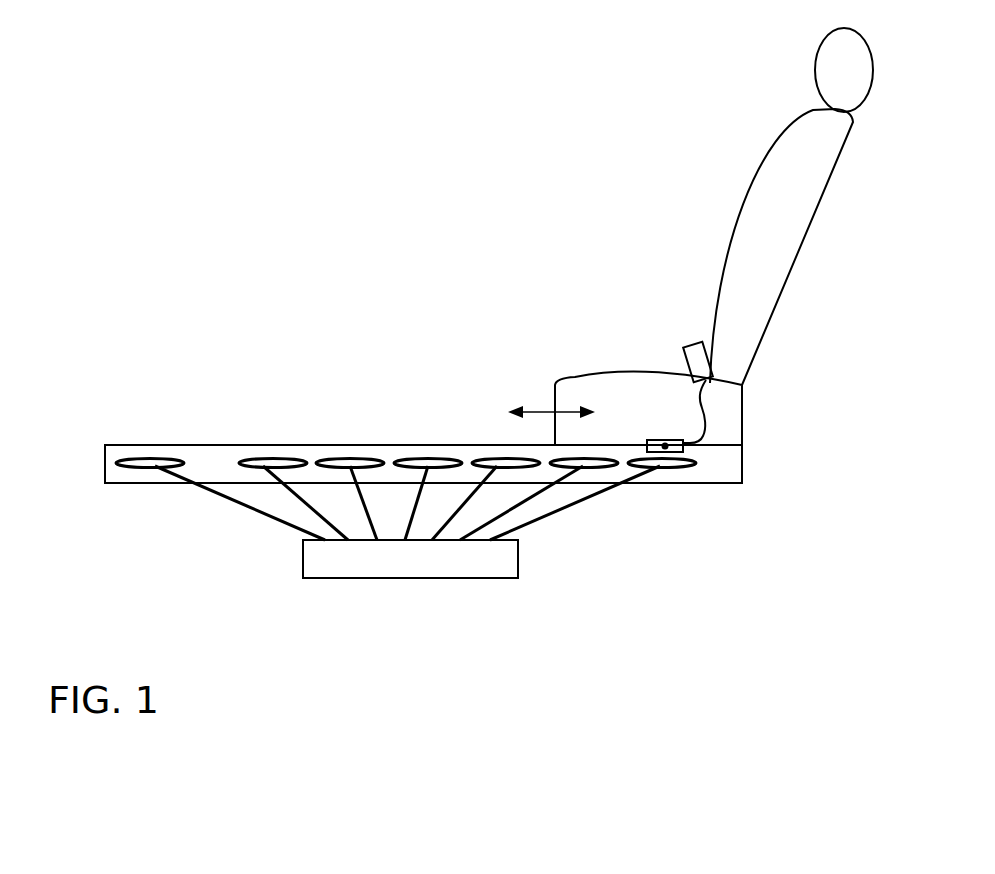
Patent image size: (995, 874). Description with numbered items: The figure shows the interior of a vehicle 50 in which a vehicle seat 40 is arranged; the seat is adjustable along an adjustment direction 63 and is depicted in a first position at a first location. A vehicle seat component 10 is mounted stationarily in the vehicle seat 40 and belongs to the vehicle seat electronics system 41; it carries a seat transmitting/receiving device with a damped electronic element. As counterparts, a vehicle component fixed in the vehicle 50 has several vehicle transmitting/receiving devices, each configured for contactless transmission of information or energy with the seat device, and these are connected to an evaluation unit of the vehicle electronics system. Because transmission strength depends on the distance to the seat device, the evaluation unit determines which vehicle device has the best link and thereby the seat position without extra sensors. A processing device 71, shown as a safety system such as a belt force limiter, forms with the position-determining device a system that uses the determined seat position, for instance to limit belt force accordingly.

The vehicle seat component 10 is at (640, 423).
The vehicle seat 40 is at (768, 203).
The vehicle seat electronics system 41 is at (702, 408).
The vehicle 50 is at (256, 196).
The adjustment direction 63 is at (548, 412).
The processing device 71 is at (695, 357).